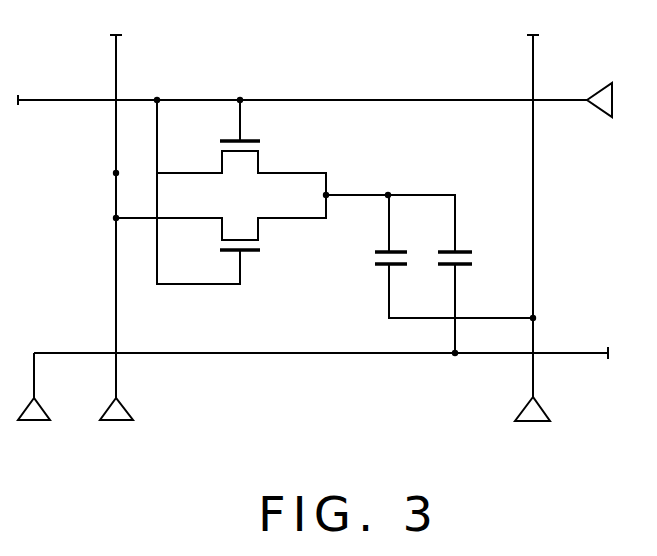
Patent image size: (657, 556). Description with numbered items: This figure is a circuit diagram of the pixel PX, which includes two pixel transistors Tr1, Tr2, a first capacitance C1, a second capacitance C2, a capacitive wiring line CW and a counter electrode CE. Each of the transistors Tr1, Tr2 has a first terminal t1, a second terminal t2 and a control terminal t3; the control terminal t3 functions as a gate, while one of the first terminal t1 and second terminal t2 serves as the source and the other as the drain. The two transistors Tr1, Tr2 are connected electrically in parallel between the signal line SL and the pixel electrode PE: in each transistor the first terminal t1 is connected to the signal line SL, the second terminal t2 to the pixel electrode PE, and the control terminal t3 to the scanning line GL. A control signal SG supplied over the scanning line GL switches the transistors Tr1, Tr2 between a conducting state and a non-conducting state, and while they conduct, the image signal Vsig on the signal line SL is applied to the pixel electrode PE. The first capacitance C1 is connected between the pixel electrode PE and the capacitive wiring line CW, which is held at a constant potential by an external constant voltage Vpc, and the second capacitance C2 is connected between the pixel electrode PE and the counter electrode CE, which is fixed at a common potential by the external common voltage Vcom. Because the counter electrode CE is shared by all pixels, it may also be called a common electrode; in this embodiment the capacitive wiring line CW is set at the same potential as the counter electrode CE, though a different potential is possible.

The signal line SL is at (116, 66).
The scanning line GL is at (386, 97).
The capacitive wiring line CW is at (533, 70).
The pixel PX is at (559, 80).
The control signal SG is at (618, 100).
The counter electrode CE is at (576, 350).
The pixel electrode PE is at (388, 193).
The transistor Tr1 is at (269, 138).
The transistor Tr2 is at (272, 235).
The first terminal t1 is at (195, 218).
The second terminal t2 is at (304, 218).
The control terminal t3 is at (240, 125).
The first capacitance C1 is at (397, 283).
The second capacitance C2 is at (487, 300).
The common voltage Vcom is at (37, 425).
The image signal Vsig is at (116, 425).
The constant voltage Vpc is at (535, 425).